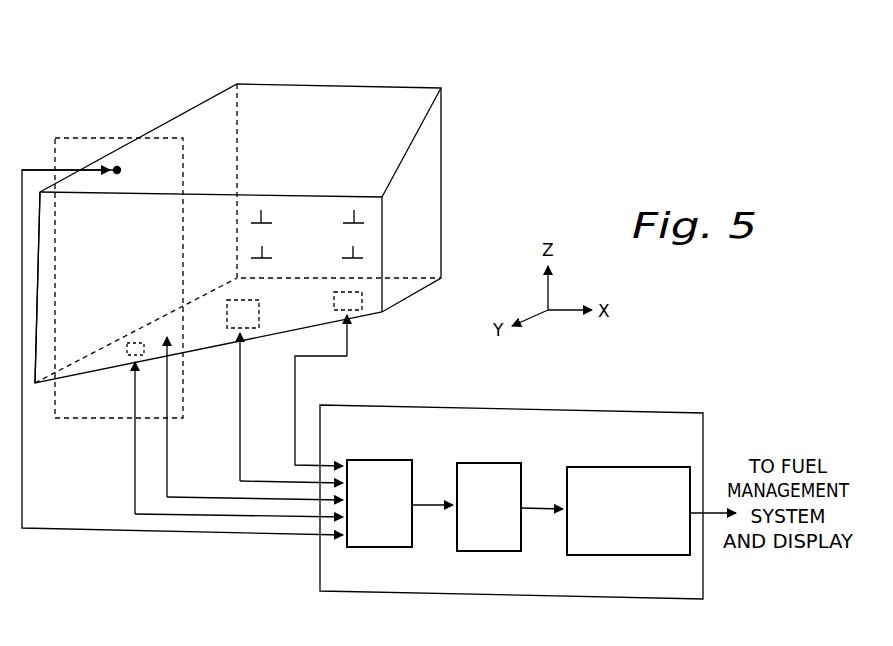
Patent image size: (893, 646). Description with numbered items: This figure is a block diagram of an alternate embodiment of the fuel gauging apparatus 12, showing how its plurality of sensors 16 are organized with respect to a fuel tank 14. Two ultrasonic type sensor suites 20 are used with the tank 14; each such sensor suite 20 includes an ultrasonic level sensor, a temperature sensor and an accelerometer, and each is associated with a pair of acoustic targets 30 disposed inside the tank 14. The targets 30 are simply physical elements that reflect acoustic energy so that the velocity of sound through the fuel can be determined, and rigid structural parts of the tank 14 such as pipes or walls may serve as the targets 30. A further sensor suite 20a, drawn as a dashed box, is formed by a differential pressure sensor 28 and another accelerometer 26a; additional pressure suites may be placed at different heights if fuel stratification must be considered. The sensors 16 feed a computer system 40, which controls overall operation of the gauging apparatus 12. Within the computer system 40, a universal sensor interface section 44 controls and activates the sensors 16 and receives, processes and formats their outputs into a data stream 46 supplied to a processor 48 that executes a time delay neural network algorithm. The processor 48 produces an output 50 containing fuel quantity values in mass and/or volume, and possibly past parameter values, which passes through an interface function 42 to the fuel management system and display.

The fuel gauging apparatus 12 is at (540, 180).
The fuel tank 14 is at (332, 112).
The sensors 16 is at (266, 48).
The sensor suites 20 is at (227, 312).
The sensor suite 20a is at (112, 138).
The accelerometer 26a is at (164, 332).
The differential pressure sensor 28 is at (117, 170).
The acoustic targets 30 is at (262, 258).
The computer system 40 is at (562, 405).
The interface function 42 is at (605, 467).
The universal sensor interface (USI) section 44 is at (378, 460).
The data stream 46 is at (430, 505).
The processor 48 is at (490, 463).
The output 50 is at (540, 508).